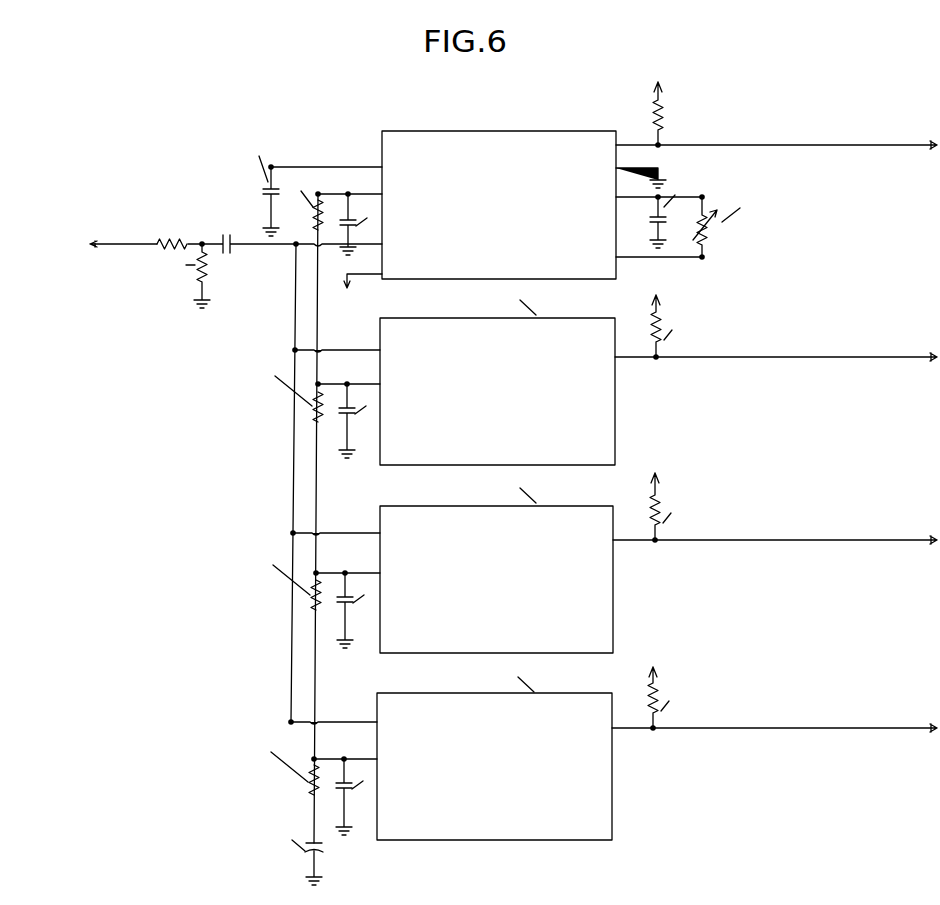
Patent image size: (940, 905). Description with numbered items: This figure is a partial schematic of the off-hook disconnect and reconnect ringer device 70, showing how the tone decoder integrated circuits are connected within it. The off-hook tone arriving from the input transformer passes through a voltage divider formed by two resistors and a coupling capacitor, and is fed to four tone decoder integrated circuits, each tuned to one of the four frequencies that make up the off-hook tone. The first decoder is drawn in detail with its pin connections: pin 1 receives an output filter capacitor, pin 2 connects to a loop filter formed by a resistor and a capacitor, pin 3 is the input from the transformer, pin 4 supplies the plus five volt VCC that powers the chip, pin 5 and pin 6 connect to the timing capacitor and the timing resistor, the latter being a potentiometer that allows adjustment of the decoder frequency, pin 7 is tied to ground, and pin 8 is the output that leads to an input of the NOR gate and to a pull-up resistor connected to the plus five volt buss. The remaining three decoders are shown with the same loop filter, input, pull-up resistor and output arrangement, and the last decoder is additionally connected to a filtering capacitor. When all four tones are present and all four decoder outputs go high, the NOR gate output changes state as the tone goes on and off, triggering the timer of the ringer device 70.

The off-hook disconnect and reconnect ringer device 70 is at (199, 81).
The decoder pin 1 is at (326, 159).
The decoder pin 2 (loop filter) 2 is at (348, 468).
The decoder pin 3 (input) 3 is at (335, 476).
The decoder pin 4 (VCC) 4 is at (363, 273).
The decoder pin 5 (timing resistor) 5 is at (659, 249).
The decoder pin 6 is at (659, 189).
The decoder pin 7 (GND) 7 is at (641, 170).
The decoder pin 8 (output) 8 is at (774, 431).